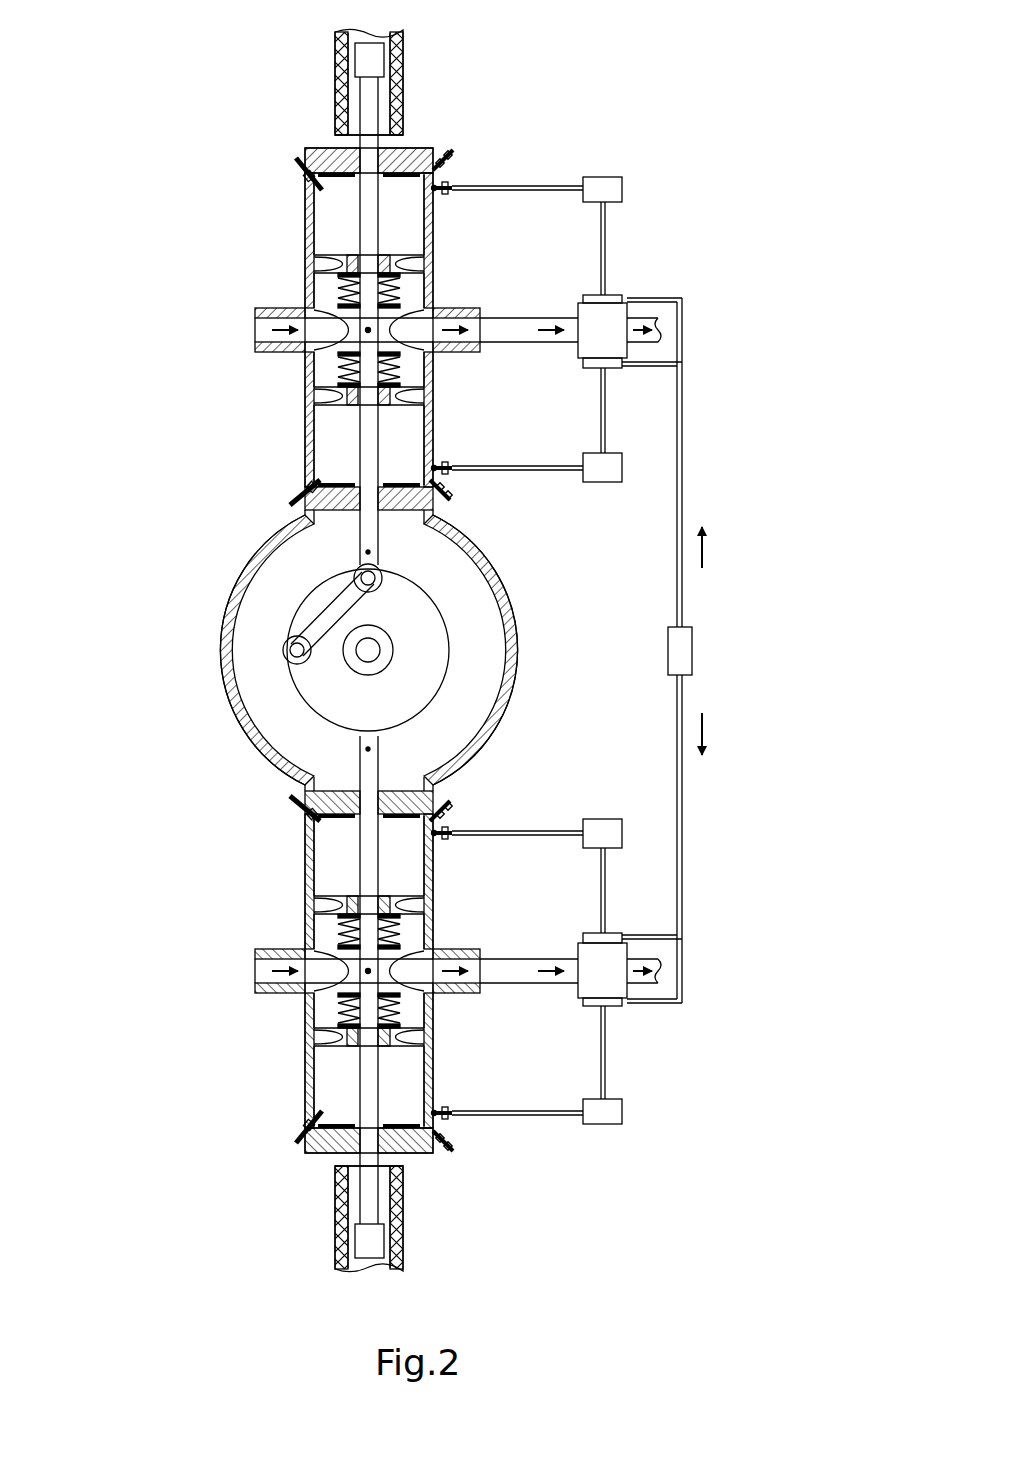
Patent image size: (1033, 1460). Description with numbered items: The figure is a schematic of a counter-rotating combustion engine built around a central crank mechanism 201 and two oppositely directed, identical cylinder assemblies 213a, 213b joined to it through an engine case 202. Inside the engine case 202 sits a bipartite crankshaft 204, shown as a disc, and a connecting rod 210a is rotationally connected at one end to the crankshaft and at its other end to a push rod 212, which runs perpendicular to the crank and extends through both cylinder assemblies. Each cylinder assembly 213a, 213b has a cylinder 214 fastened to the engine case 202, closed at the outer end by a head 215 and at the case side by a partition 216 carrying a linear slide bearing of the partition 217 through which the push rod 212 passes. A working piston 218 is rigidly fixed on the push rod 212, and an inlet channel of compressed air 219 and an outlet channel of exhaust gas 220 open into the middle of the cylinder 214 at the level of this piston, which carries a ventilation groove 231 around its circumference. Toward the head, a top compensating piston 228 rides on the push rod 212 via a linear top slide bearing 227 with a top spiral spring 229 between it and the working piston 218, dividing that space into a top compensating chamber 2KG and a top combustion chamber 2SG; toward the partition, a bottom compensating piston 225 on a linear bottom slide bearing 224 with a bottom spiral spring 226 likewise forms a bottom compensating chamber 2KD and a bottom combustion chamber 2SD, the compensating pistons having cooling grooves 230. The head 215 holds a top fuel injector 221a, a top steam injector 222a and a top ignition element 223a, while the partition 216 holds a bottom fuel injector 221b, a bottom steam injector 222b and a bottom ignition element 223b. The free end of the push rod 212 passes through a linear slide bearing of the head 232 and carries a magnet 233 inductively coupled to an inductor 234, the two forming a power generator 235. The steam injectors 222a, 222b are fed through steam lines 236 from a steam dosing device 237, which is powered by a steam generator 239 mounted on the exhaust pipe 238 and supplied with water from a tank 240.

The crank mechanism 201 is at (250, 658).
The engine case 202 is at (222, 640).
The bipartite crankshaft 204 is at (440, 645).
The connecting rod 210a is at (310, 635).
The push rod 212 is at (365, 428).
The cylinder assembly 213a is at (150, 183).
The cylinder assembly 213b is at (145, 873).
The cylinder 214 is at (433, 300).
The head 215 is at (430, 153).
The partition 216 is at (447, 503).
The linear slide bearing of the partition 217 is at (305, 510).
The working piston 218 is at (313, 308).
The inlet channel of compressed air 219 is at (270, 325).
The outlet channel of exhaust gas 220 is at (470, 325).
The top fuel injector 221a is at (450, 157).
The bottom fuel injector 221b is at (450, 492).
The top steam injector 222a is at (448, 186).
The bottom steam injector 222b is at (450, 470).
The top ignition element 223a is at (302, 173).
The bottom ignition element 223b is at (300, 490).
The linear bottom slide bearing 224 is at (433, 420).
The bottom compensating piston 225 is at (315, 395).
The bottom spiral spring 226 is at (433, 378).
The linear top slide bearing 227 is at (433, 253).
The top compensating piston 228 is at (315, 252).
The top spiral spring 229 is at (433, 283).
The cooling grooves 230 is at (433, 395).
The ventilation groove 231 is at (415, 338).
The linear slide bearing of the head 232 is at (342, 150).
The magnet 233 is at (372, 63).
The inductor 234 is at (405, 100).
The power generator 235 is at (310, 58).
The steam lines 236 is at (566, 184).
The steam dosing device 237 is at (605, 190).
The exhaust pipe 238 is at (632, 320).
The steam generator 239 is at (606, 318).
The tank 240 is at (683, 644).
The top combustion chamber 2SG is at (335, 220).
The bottom combustion chamber 2SD is at (318, 418).
The top compensating chamber 2KG is at (312, 283).
The bottom compensating chamber 2KD is at (305, 366).